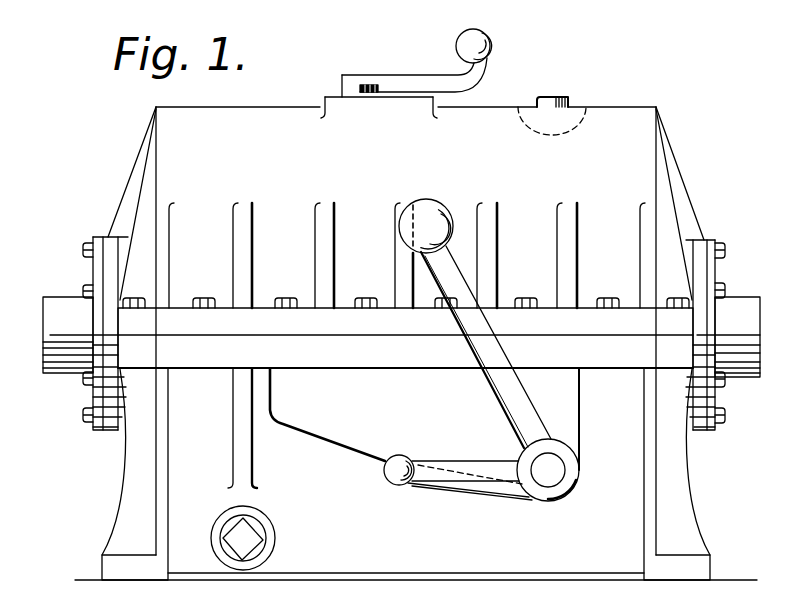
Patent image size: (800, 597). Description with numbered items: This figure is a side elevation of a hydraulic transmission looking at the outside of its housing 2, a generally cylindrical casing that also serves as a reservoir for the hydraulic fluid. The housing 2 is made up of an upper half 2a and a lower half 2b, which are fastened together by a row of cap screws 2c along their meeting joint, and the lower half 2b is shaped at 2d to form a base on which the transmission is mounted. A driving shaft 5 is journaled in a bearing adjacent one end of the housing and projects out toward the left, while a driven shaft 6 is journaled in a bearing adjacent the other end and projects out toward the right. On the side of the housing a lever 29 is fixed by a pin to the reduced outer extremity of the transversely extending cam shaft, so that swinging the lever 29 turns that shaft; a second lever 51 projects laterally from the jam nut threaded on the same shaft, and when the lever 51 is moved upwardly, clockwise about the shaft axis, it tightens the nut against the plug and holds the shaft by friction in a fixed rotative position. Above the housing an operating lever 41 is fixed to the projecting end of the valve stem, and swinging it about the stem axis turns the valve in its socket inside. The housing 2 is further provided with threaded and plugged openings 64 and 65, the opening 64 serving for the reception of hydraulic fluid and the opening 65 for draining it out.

The housing 2 is at (657, 114).
The upper half of housing 2a is at (257, 118).
The lower half of housing 2b is at (570, 557).
The cap screws 2c is at (218, 298).
The base 2d is at (697, 563).
The driving shaft 5 is at (58, 338).
The driven shaft 6 is at (747, 321).
The lever 29 is at (488, 351).
The operating lever 41 is at (422, 78).
The lever 51 is at (442, 467).
The threaded and plugged opening 64 is at (569, 103).
The threaded and plugged opening 65 is at (264, 536).